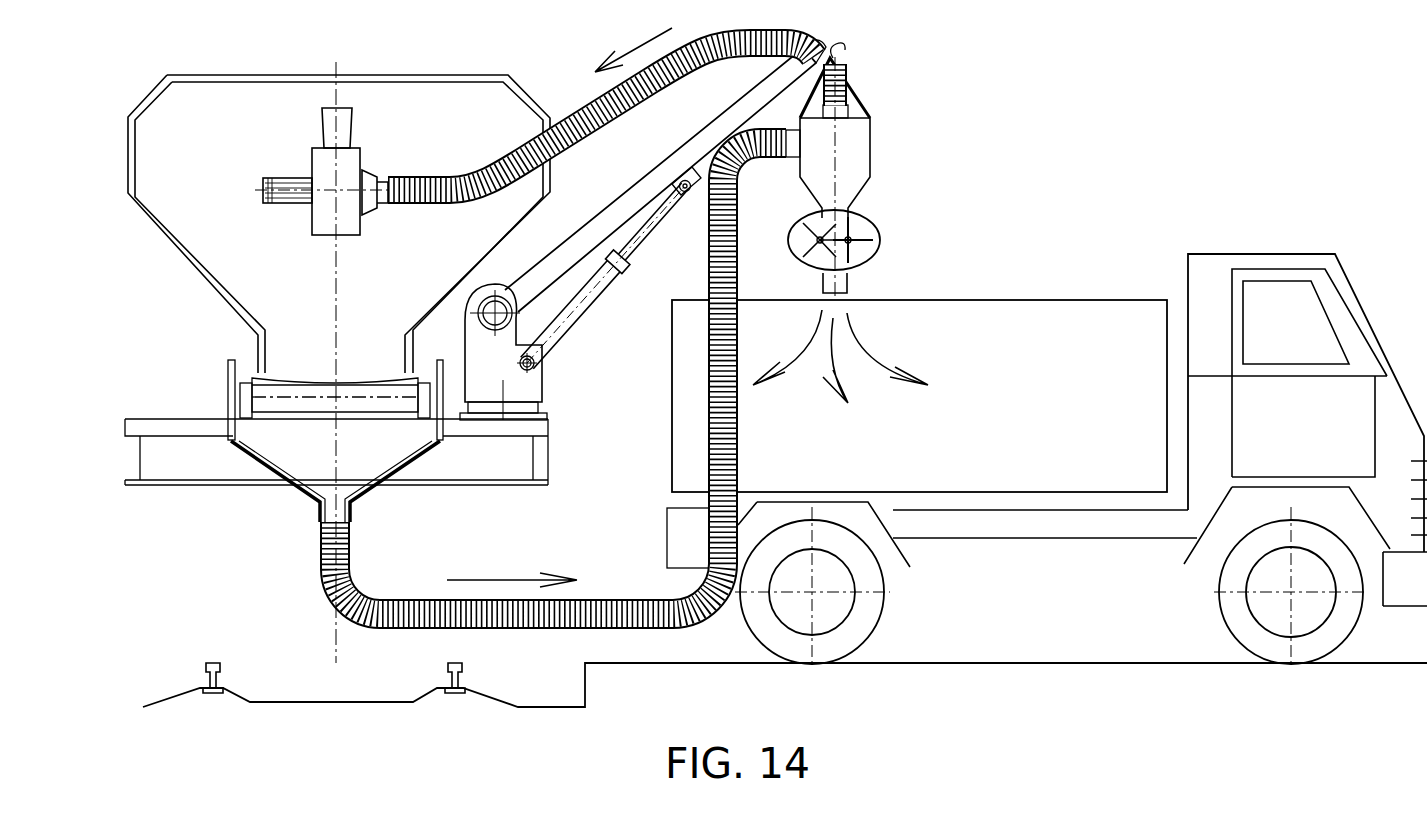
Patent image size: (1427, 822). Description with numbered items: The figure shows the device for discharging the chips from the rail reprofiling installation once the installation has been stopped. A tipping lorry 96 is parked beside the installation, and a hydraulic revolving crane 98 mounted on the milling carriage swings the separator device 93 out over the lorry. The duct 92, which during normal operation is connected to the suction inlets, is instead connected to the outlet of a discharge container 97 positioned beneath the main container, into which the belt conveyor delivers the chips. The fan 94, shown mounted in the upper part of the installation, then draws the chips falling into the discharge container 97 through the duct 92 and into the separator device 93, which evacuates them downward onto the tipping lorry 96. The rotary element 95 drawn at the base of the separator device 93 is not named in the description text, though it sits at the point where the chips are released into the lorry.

The duct 92 is at (613, 610).
The separator device 93 is at (855, 157).
The fan 94 is at (350, 163).
The fan 95 is at (862, 232).
The tipping lorry 96 is at (1052, 347).
The discharge container 97 is at (295, 453).
The hydraulic revolving crane 98 is at (496, 352).